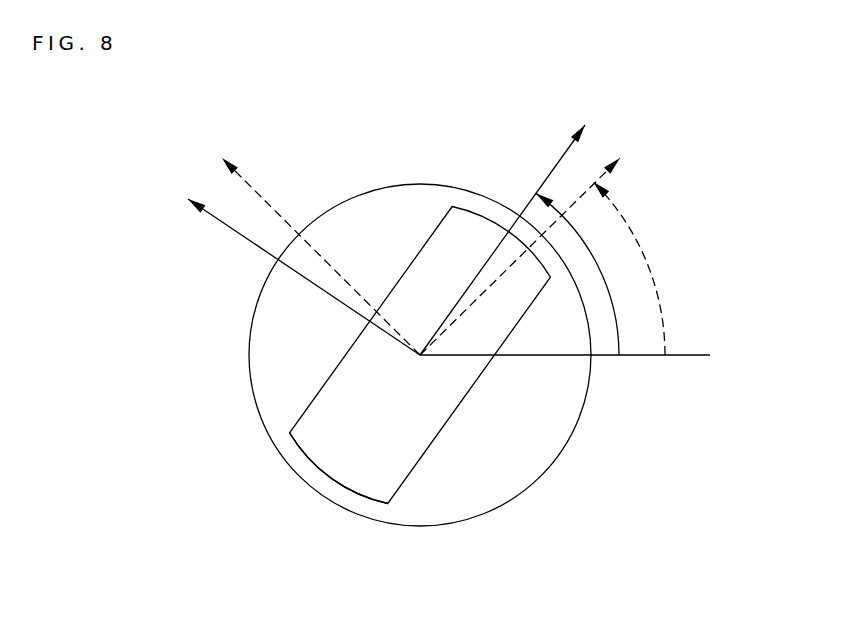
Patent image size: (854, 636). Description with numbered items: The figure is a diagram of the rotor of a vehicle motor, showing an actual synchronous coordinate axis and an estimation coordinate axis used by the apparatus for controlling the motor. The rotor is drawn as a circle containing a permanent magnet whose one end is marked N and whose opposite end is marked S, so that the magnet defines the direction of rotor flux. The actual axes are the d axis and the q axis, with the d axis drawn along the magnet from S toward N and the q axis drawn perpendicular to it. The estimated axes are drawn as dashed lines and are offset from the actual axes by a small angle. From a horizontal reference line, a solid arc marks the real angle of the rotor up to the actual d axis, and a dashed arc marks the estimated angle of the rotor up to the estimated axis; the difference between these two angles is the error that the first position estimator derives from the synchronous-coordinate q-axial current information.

The north pole of rotor magnet N is at (420, 355).
The south pole of rotor magnet S is at (339, 466).
The d axis d is at (530, 226).
The q axis q is at (264, 263).